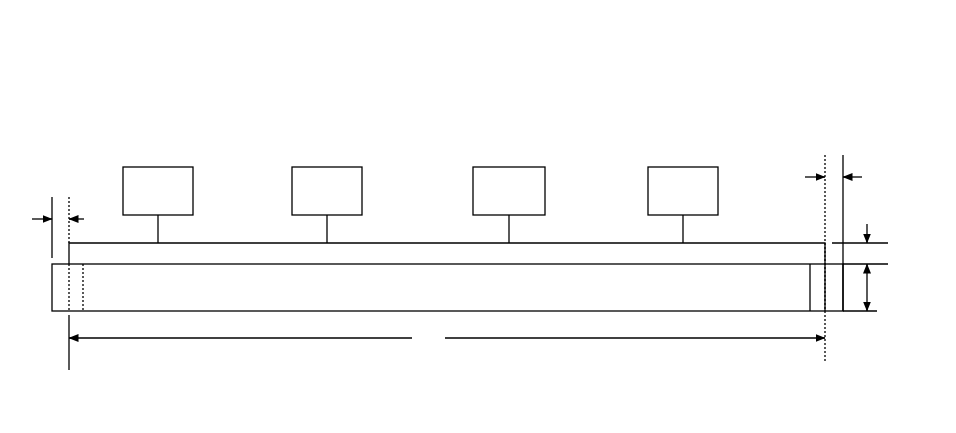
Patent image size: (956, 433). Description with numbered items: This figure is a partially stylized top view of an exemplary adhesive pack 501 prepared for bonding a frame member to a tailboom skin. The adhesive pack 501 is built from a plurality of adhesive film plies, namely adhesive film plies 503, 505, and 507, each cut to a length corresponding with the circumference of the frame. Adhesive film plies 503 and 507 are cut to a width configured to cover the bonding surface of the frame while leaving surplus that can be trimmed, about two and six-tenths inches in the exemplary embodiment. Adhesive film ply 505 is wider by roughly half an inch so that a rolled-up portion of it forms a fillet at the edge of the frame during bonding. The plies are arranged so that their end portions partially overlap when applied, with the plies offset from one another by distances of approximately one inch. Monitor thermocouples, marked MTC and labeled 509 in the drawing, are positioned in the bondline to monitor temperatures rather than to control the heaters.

The adhesive pack 501 is at (283, 80).
The adhesive film ply 503 is at (547, 264).
The adhesive film ply 505 is at (408, 243).
The adhesive film ply 507 is at (837, 312).
The MTC module 509 is at (132, 167).